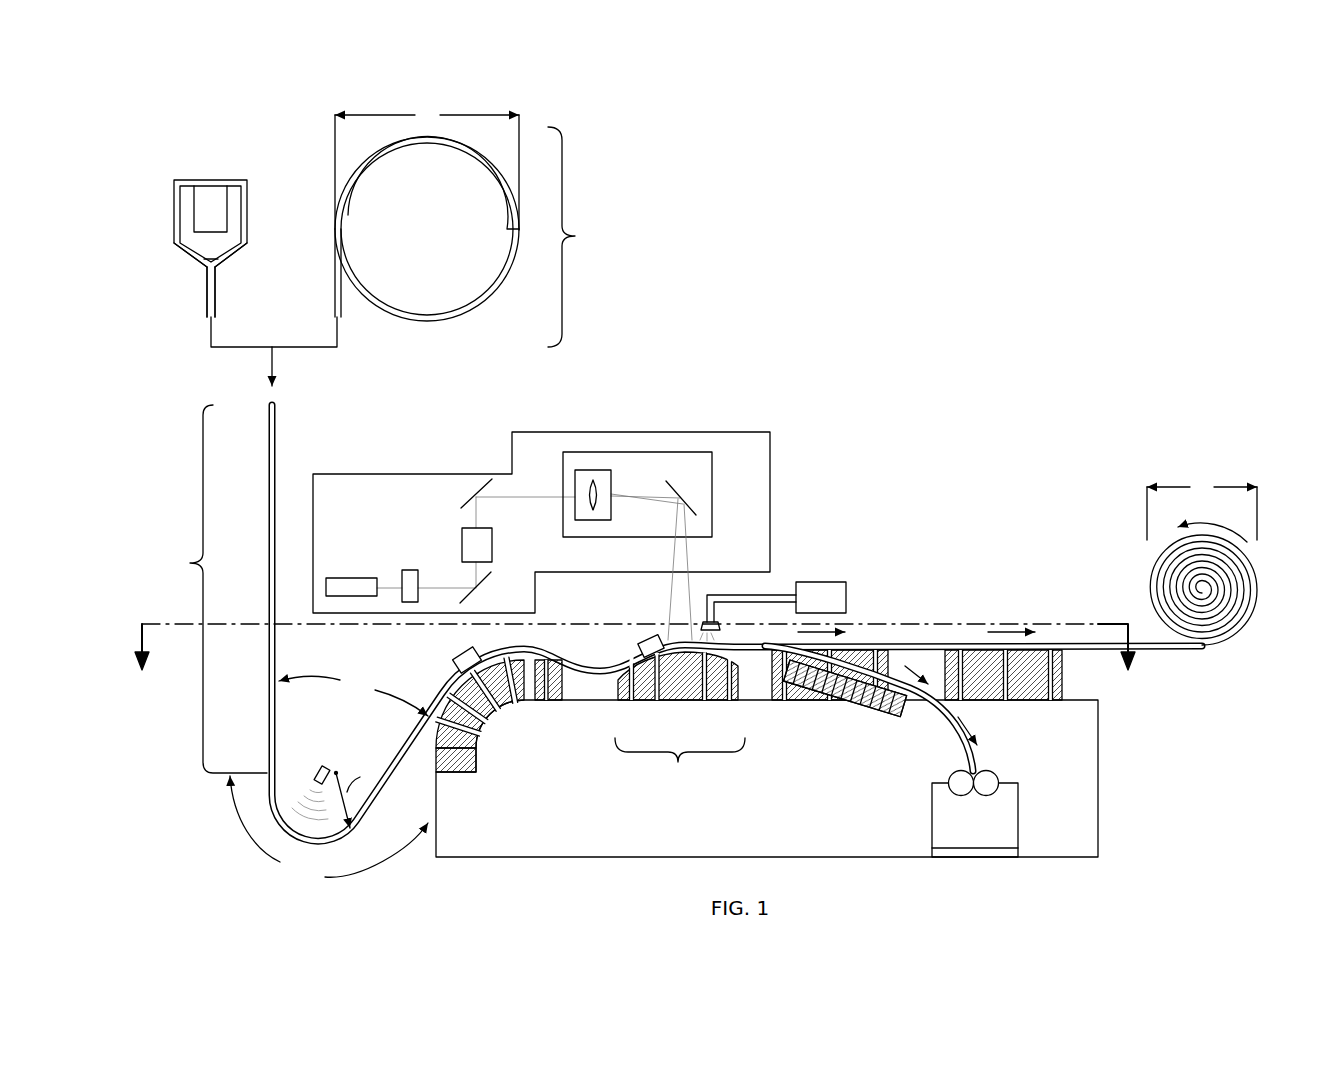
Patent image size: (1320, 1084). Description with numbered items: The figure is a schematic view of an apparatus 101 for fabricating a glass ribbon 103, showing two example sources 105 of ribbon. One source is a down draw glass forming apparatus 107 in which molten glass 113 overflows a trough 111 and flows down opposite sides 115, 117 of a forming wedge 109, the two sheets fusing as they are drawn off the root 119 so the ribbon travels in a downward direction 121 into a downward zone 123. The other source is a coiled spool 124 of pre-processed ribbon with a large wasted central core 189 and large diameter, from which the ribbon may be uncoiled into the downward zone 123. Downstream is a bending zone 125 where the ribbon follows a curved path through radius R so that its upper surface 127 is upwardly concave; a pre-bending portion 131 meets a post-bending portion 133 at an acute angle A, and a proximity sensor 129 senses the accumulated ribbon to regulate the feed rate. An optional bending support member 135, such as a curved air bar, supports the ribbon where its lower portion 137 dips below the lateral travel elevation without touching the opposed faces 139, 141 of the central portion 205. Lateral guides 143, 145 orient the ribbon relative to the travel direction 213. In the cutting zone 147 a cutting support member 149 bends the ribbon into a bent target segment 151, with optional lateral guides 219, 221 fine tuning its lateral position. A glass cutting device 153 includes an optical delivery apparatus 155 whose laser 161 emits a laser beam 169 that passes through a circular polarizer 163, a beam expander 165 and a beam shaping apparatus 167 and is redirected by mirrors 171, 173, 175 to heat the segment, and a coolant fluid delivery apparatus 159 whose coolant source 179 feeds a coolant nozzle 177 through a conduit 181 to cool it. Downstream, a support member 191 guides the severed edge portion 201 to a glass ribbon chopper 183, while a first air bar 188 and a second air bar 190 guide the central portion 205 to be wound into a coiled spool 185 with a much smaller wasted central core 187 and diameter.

The apparatus 101 is at (952, 318).
The glass ribbon 103 is at (268, 426).
The source of glass ribbon 105 is at (477, 256).
The down draw glass forming apparatus 107 is at (210, 206).
The forming wedge 109 is at (222, 248).
The trough 111 is at (220, 200).
The molten glass 113 is at (200, 180).
The side of forming wedge 115 is at (182, 246).
The side of forming wedge 117 is at (243, 246).
The root of forming wedge 119 is at (207, 271).
The downward direction 121 is at (272, 363).
The downward zone 123 is at (671, 648).
The coiled spool 124 is at (391, 322).
The bending zone 125 is at (329, 833).
The upper surface 127 is at (283, 793).
The proximity sensor 129 is at (328, 767).
The pre-bending portion 131 is at (268, 733).
The post-bending portion 133 is at (437, 778).
The bending support member 135 is at (547, 700).
The lower portion of glass ribbon 137 is at (343, 840).
The face of glass ribbon 139 is at (534, 645).
The face of glass ribbon 141 is at (525, 664).
The lateral guide 143 is at (414, 658).
The lateral guide 145 is at (455, 661).
The cutting zone 147 is at (680, 724).
The cutting support member 149 is at (710, 700).
The bent target segment 151 is at (662, 635).
The glass cutting device 153 is at (779, 510).
The optical delivery apparatus 155 is at (688, 418).
The coolant fluid delivery apparatus 159 is at (826, 566).
The laser 161 is at (334, 577).
The circular polarizer 163 is at (410, 569).
The beam expander 165 is at (492, 545).
The beam shaping apparatus 167 is at (590, 470).
The laser beam 169 is at (388, 584).
The mirror 171 is at (482, 590).
The mirror 173 is at (470, 497).
The mirror 175 is at (676, 483).
The coolant nozzle 177 is at (722, 618).
The coolant source 179 is at (848, 586).
The conduit 181 is at (784, 594).
The glass ribbon chopper 183 is at (1020, 820).
The coiled spool 185 is at (1225, 602).
The central core 187 is at (1210, 592).
The first air bar 188 is at (813, 700).
The central core 189 is at (455, 253).
The second air bar 190 is at (1043, 700).
The support member 191 is at (886, 705).
The edge portion 201 is at (955, 734).
The central portion 205 is at (896, 630).
The travel direction 213 is at (1003, 630).
The lateral guide 219 is at (630, 569).
The lateral guide 221 is at (680, 569).